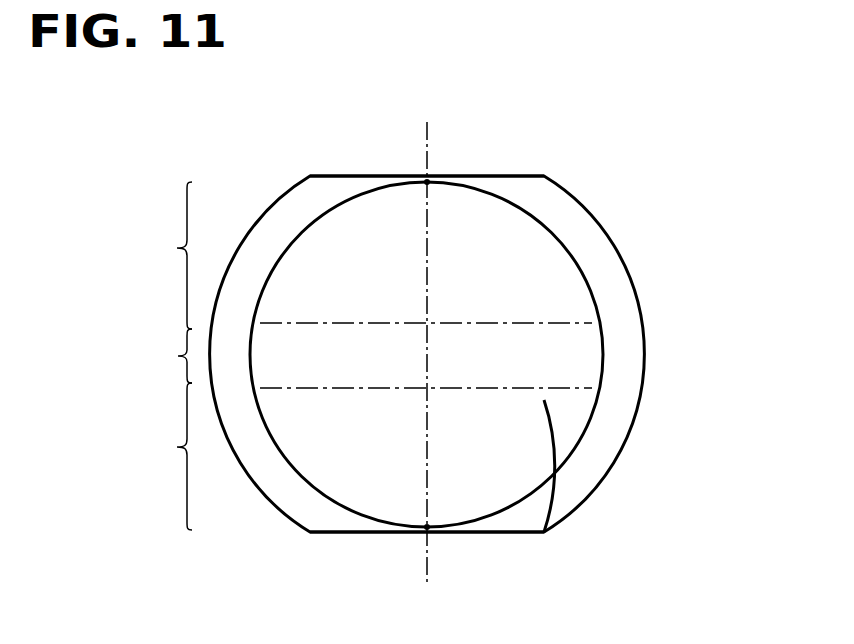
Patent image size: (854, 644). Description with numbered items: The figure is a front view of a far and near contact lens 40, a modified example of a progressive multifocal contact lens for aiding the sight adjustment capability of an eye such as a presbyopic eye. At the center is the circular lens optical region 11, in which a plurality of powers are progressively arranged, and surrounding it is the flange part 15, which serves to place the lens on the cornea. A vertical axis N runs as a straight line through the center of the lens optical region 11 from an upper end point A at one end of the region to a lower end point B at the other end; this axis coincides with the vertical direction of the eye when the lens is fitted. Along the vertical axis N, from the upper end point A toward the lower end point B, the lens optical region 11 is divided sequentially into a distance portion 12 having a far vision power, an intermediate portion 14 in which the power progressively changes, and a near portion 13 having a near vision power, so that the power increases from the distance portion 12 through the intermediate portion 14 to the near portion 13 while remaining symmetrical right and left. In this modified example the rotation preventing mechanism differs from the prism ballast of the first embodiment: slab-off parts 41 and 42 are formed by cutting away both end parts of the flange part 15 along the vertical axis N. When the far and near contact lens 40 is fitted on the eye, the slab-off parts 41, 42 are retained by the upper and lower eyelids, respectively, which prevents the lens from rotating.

The far and near contact lens 40 is at (642, 221).
The slab-off part 41 is at (517, 176).
The slab-off part 42 is at (500, 533).
The flange part 15 is at (590, 483).
The lens optical region 11 is at (603, 357).
The vertical axis N is at (427, 153).
The upper end point A is at (422, 187).
The lower end point B is at (437, 517).
The distance portion 12 is at (167, 255).
The intermediate portion 14 is at (167, 356).
The near portion 13 is at (167, 456).